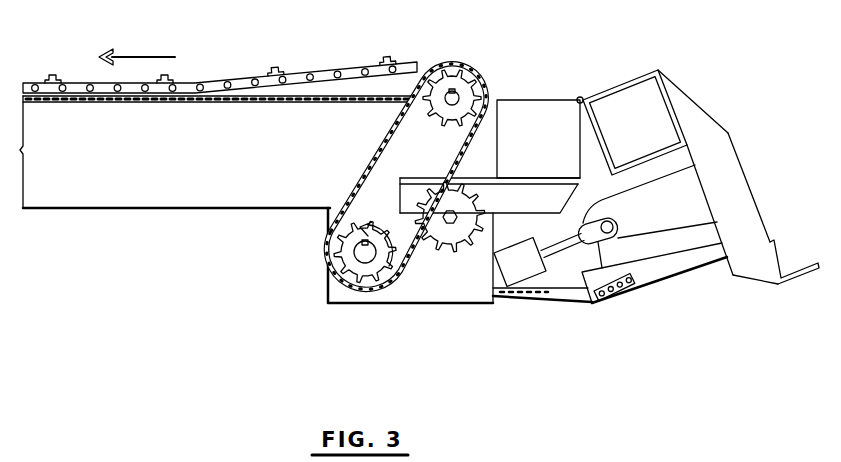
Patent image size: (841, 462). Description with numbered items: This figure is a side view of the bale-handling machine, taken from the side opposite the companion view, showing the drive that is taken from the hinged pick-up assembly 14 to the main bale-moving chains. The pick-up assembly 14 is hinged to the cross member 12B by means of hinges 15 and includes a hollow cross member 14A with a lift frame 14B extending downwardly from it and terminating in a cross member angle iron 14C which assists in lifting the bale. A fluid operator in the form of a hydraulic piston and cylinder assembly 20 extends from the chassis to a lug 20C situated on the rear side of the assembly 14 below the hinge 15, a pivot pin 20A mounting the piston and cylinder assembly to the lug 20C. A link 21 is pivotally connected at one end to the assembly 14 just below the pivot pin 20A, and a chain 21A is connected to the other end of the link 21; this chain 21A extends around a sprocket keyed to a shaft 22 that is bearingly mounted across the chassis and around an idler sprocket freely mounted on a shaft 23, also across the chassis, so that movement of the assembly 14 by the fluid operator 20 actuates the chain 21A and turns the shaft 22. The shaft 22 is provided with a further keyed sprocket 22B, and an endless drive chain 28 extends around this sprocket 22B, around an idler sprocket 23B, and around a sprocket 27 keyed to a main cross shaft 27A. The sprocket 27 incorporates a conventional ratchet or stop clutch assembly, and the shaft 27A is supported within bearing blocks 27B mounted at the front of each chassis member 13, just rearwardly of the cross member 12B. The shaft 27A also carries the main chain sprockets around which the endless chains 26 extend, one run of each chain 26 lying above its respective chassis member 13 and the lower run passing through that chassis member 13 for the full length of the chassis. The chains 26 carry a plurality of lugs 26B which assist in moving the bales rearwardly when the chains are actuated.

The chassis member 13 is at (165, 206).
The endless chain 26 is at (306, 82).
The lug 26B is at (275, 71).
The sprocket 27 is at (463, 75).
The main cross shaft 27A is at (459, 100).
The bearing block 27B is at (442, 80).
The endless drive chain 28 is at (330, 222).
The shaft 23 is at (446, 212).
The idler sprocket 23B is at (476, 207).
The shaft 22 is at (357, 257).
The keyed sprocket 22B is at (337, 243).
The cross member 12B is at (577, 98).
The hinge 15 is at (581, 97).
The hinged pick-up assembly 14 is at (614, 87).
The hollow cross member 14A is at (681, 91).
The lift frame 14B is at (757, 213).
The cross member angle iron 14C is at (800, 283).
The piston and cylinder assembly 20 is at (550, 242).
The pivot pin 20A is at (615, 223).
The lug 20C is at (626, 207).
The link 21 is at (541, 299).
The chain 21A is at (510, 297).